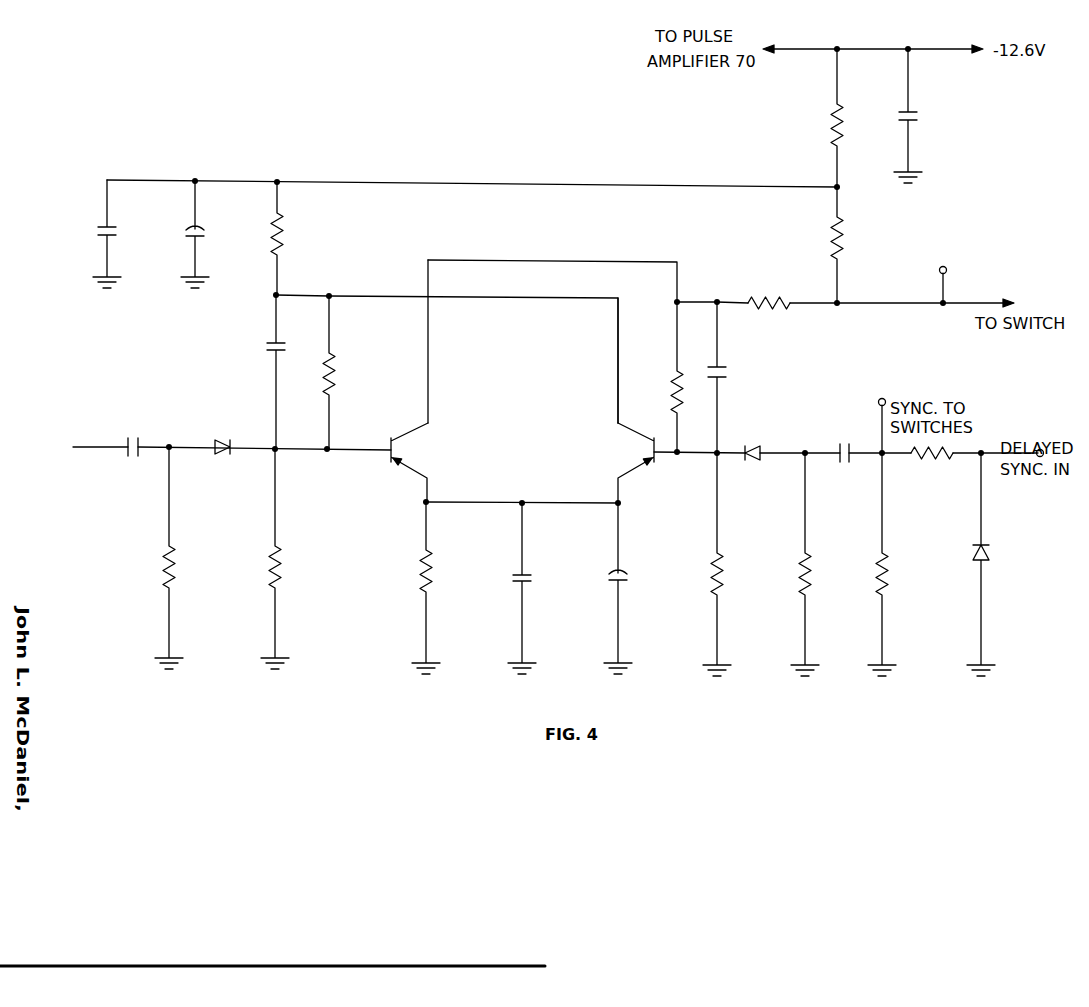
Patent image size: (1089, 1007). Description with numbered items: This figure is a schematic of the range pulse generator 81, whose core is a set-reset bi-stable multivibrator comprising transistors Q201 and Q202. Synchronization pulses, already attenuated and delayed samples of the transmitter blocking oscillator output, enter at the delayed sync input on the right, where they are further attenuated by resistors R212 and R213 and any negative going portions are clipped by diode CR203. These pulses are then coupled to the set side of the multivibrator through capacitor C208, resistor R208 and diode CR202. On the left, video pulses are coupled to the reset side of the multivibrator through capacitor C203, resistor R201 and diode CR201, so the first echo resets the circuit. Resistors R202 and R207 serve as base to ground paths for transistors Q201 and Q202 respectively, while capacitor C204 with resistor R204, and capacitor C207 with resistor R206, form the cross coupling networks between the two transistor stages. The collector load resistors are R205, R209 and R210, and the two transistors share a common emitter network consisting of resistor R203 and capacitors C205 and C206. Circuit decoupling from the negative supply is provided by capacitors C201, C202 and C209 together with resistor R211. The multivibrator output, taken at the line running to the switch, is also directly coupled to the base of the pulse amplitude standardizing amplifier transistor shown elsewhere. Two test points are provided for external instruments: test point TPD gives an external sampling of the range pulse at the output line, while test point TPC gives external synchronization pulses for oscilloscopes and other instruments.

The decoupling capacitor C201 is at (98, 231).
The decoupling capacitor C202 is at (204, 231).
The coupling capacitor C203 is at (131, 456).
The cross coupling capacitor C204 is at (266, 347).
The common emitter capacitor C205 is at (531, 584).
The common emitter capacitor C206 is at (628, 580).
The cross coupling capacitor C207 is at (728, 375).
The coupling capacitor C208 is at (842, 463).
The decoupling capacitor C209 is at (920, 116).
The coupling resistor R201 is at (176, 565).
The base to ground resistor R202 is at (282, 565).
The common emitter resistor R203 is at (433, 568).
The cross coupling resistor R204 is at (336, 362).
The collector load resistor R205 is at (284, 222).
The cross coupling resistor R206 is at (672, 394).
The base to ground resistor R207 is at (723, 571).
The coupling resistor R208 is at (811, 571).
The collector load resistor R209 is at (770, 297).
The collector load resistor R210 is at (846, 241).
The decoupling resistor R211 is at (830, 125).
The attenuating resistor R212 is at (889, 569).
The attenuating resistor R213 is at (916, 460).
The transistor Q201 is at (394, 449).
The transistor Q202 is at (650, 450).
The diode CR201 is at (222, 456).
The diode CR202 is at (778, 482).
The clipping diode CR203 is at (988, 555).
The range pulse generator 81 is at (533, 356).
The test point TPC is at (880, 416).
The test point TPD is at (943, 275).